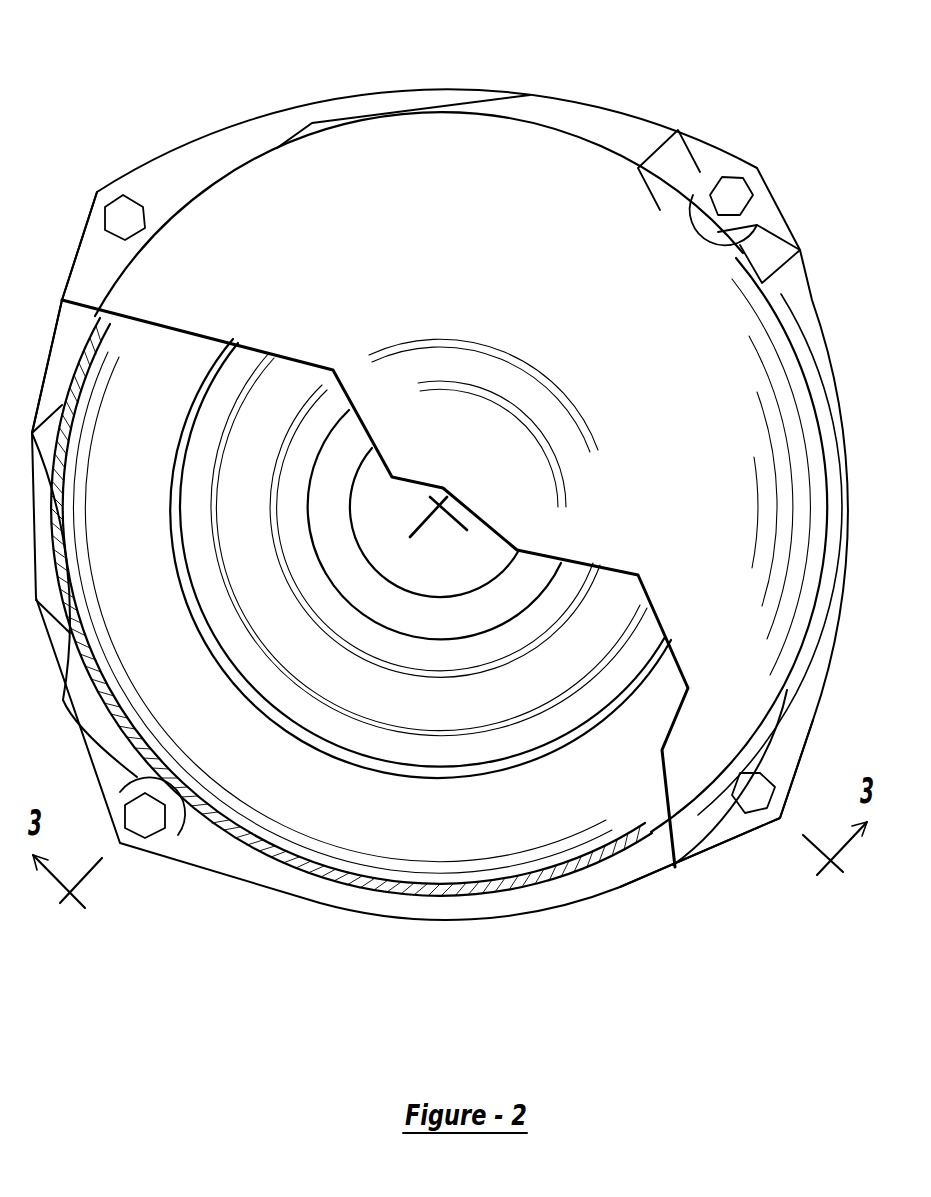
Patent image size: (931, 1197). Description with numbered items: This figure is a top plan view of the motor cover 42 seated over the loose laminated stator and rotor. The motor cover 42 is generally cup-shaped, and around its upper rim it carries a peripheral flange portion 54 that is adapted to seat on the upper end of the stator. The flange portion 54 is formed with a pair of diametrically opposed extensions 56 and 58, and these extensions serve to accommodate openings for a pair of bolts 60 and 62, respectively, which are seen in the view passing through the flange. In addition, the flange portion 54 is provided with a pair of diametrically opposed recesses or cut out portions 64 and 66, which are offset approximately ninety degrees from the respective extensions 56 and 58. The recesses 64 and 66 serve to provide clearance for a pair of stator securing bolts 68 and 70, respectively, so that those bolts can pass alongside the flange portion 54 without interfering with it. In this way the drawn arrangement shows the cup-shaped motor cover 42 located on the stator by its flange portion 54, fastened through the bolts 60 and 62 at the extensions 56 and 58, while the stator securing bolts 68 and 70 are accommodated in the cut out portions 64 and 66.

The motor cover 42 is at (708, 348).
The peripheral flange portion 54 is at (635, 123).
The extension 56 is at (720, 822).
The extension 58 is at (98, 243).
The bolt 60 is at (755, 790).
The bolt 62 is at (128, 210).
The recess or cut out portion 64 is at (700, 196).
The recess or cut out portion 66 is at (178, 822).
The stator securing bolt 68 is at (745, 195).
The stator securing bolt 70 is at (141, 812).